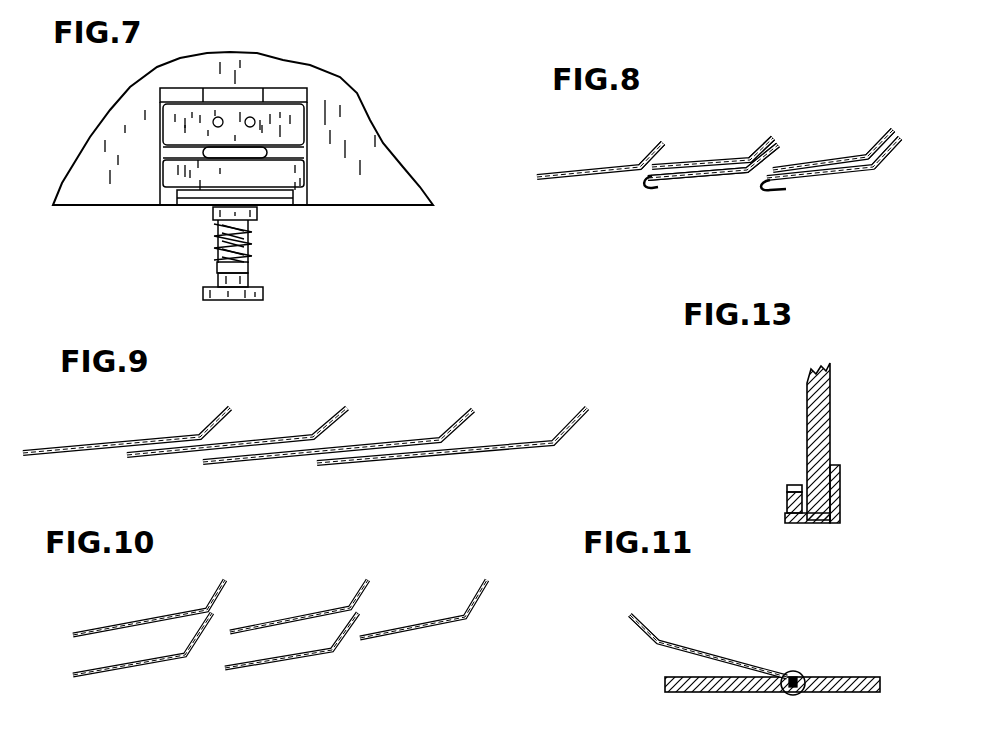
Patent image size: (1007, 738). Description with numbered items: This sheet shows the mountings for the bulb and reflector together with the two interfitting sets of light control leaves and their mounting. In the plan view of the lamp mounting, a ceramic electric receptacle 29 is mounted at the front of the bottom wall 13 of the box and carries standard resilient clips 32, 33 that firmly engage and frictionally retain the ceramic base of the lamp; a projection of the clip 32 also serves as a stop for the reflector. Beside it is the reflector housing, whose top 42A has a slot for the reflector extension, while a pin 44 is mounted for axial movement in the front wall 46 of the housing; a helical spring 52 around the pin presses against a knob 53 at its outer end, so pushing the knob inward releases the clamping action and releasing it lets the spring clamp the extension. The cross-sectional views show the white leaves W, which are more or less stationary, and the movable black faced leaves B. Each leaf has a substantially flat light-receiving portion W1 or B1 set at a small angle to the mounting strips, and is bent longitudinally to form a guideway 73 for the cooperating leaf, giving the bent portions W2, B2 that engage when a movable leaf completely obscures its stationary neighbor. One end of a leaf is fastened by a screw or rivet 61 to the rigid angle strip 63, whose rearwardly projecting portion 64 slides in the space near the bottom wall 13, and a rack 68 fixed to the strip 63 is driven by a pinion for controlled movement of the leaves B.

In FIG. 7, the bottom wall 13 is at (243, 128).
In FIG. 7, the ceramic electric receptacle 29 is at (173, 137).
In FIG. 7, the resilient clip 32 is at (243, 153).
In FIG. 7, the resilient clip 33 is at (247, 97).
In FIG. 7, the top of housing 42A is at (280, 173).
In FIG. 7, the pin 44 is at (217, 250).
In FIG. 7, the front wall 46 is at (203, 207).
In FIG. 7, the helical spring 52 is at (250, 238).
In FIG. 7, the knob 53 is at (240, 290).
In FIG. 8, the light-receiving portion W1 is at (603, 175).
In FIG. 9, the light-receiving portion W1 is at (143, 436).
In FIG. 8, the bent guideway-forming portion W2 is at (653, 147).
In FIG. 10, the white leaves W is at (137, 620).
In FIG. 8, the black faced leaves B is at (688, 160).
In FIG. 10, the black faced leaves B is at (130, 666).
In FIG. 13, the black faced leaves B is at (813, 400).
In FIG. 11, the black faced leaves B is at (733, 656).
In FIG. 8, the light-receiving portion B1 is at (730, 173).
In FIG. 9, the light-receiving portion B1 is at (273, 437).
In FIG. 8, the bent guideway-forming portion B2 is at (767, 140).
In FIG. 11, the bent guideway-forming portion B2 is at (647, 630).
In FIG. 8, the guideway 73 is at (655, 188).
In FIG. 11, the screws or rivets 61 is at (800, 676).
In FIG. 13, the rigid angle strip 63 is at (840, 493).
In FIG. 11, the rigid angle strip 63 is at (833, 686).
In FIG. 13, the rearwardly projecting portion 64 is at (813, 521).
In FIG. 13, the rack 68 is at (788, 500).